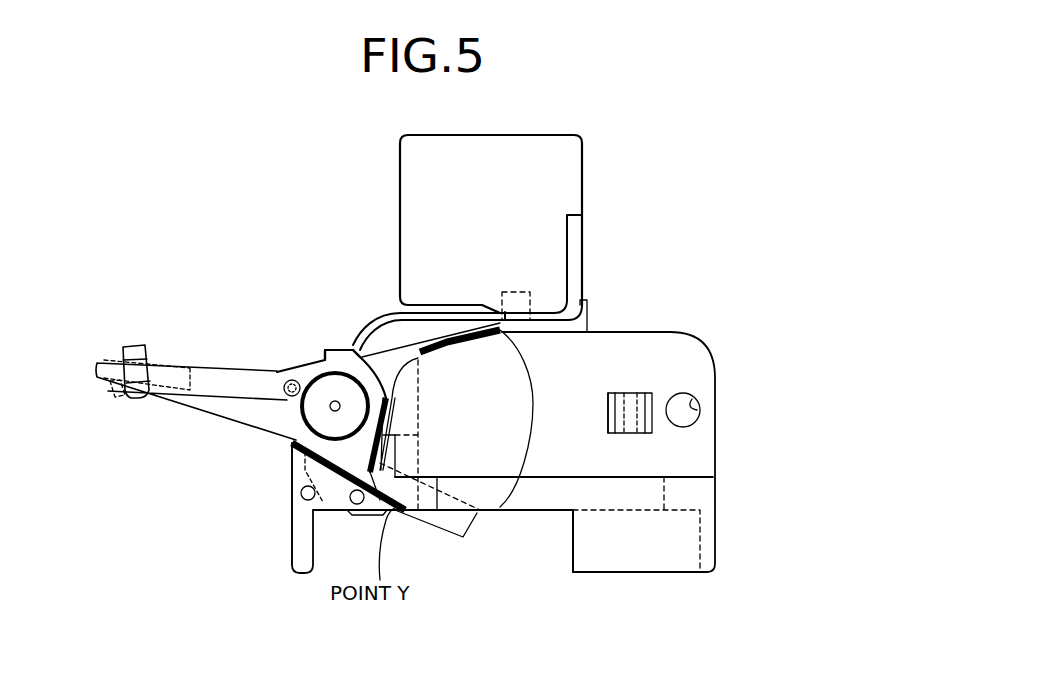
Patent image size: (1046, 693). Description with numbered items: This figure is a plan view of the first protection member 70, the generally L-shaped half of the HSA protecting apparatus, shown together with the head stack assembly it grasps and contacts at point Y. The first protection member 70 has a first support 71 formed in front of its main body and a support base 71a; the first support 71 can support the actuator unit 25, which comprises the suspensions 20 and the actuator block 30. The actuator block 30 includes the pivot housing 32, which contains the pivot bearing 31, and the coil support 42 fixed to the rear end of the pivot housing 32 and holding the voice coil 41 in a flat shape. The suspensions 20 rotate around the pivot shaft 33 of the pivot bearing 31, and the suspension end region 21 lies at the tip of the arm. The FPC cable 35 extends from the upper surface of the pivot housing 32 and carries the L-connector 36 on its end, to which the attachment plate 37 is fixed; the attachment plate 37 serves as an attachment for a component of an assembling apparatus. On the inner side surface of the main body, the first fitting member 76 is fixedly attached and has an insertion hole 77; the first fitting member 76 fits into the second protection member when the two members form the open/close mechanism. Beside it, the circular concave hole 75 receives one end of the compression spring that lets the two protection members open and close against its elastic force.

The suspension 20 is at (120, 360).
The engagement portion 21 is at (112, 384).
The actuator unit 25 is at (208, 414).
The actuator block 30 is at (331, 350).
The pivot bearing 31 is at (322, 388).
The pivot housing 32 is at (349, 356).
The pivot shaft 33 is at (331, 409).
The FPC cable 35 is at (375, 316).
The L-connector 36 is at (572, 237).
The attachment plate 37 is at (566, 160).
The voice coil 41 is at (522, 412).
The coil support 42 is at (457, 527).
The first protection member 70 is at (643, 331).
The first support 71 is at (293, 548).
The support base 71a is at (706, 555).
The circular concave hole 75 is at (700, 409).
The first fitting member 76 is at (652, 394).
The insertion hole 77 is at (618, 436).